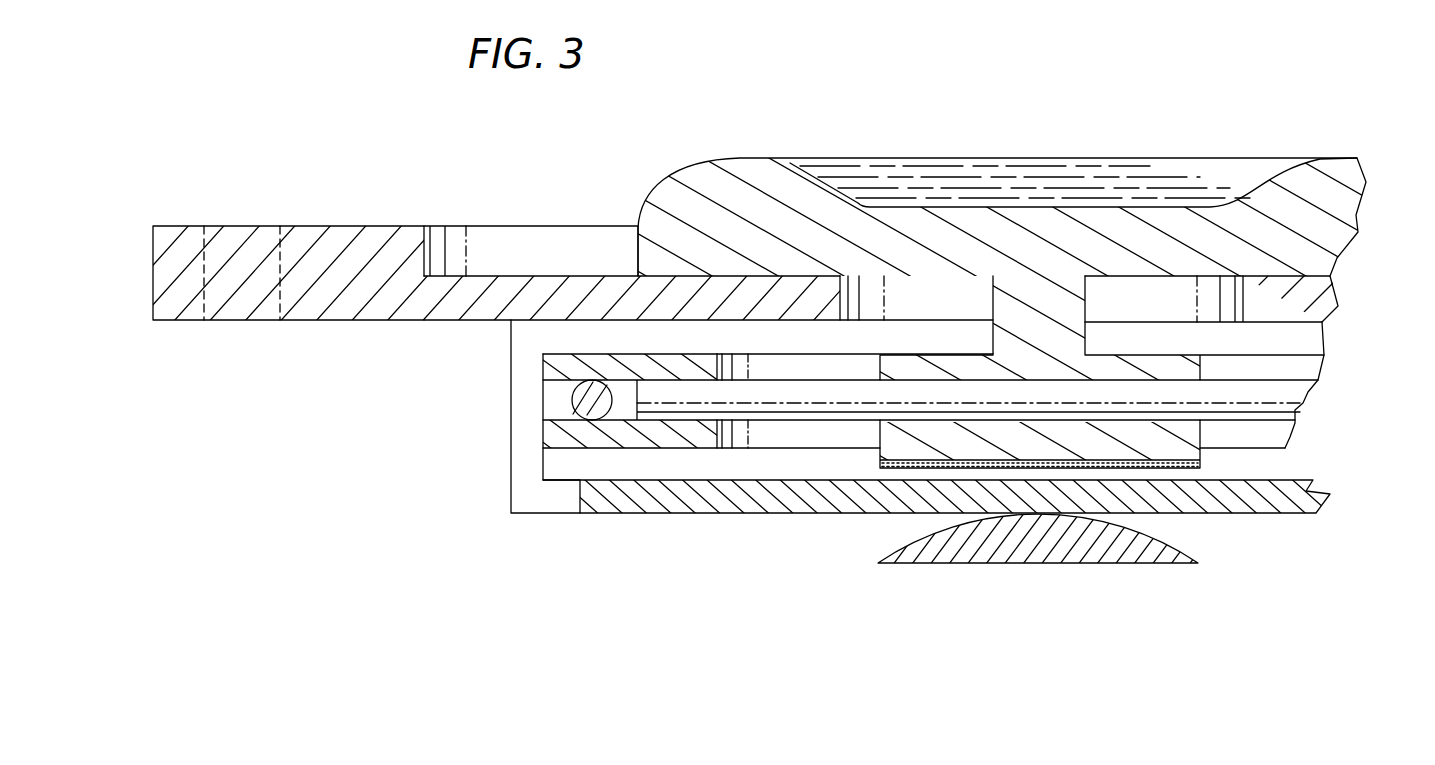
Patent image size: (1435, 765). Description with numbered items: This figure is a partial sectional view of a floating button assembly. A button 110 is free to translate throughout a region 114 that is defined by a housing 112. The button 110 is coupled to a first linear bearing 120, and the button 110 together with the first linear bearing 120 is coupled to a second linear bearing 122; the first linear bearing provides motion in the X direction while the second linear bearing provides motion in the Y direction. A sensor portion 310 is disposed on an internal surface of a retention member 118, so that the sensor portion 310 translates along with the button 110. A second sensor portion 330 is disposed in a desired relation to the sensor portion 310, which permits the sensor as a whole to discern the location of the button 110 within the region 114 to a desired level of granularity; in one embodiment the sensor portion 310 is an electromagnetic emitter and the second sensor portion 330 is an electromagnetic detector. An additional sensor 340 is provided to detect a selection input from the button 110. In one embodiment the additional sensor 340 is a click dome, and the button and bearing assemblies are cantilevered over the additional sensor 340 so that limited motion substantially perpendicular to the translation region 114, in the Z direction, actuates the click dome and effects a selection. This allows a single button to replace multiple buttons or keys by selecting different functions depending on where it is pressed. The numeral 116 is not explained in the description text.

The button 110 is at (1070, 174).
The housing 112 is at (360, 226).
The region 114 is at (537, 275).
The fastening screw 116 is at (934, 300).
The retention member 118 is at (1055, 305).
The first linear bearing 120 is at (1267, 395).
The second linear bearing 122 is at (573, 403).
The sensor portion 310 is at (1200, 462).
The second sensor portion 330 is at (1262, 508).
The additional sensor 340 is at (1110, 552).